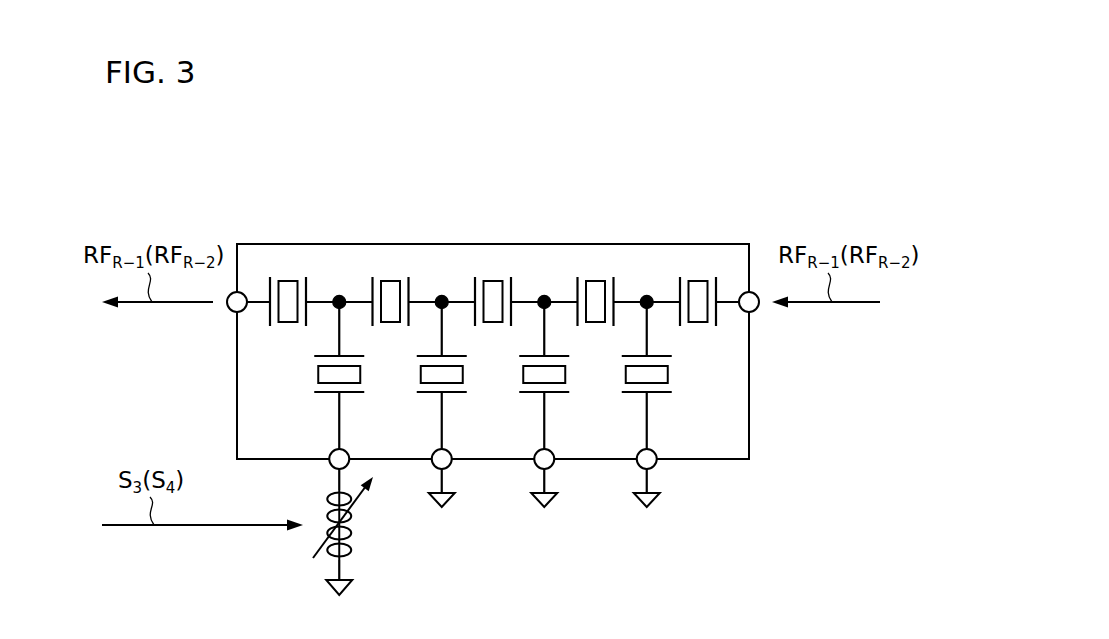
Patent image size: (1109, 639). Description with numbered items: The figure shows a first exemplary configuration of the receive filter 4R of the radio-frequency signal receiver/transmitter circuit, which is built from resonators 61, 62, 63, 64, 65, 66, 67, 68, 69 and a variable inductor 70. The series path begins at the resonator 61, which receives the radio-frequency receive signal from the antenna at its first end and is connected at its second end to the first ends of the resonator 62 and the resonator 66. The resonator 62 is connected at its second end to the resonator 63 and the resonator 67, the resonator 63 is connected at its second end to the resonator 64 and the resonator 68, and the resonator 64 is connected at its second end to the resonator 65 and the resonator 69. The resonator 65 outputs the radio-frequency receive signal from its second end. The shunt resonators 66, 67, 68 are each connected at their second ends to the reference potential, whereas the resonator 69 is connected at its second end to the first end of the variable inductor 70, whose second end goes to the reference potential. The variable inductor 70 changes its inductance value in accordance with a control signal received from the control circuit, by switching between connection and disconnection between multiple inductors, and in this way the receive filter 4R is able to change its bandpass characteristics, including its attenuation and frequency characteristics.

The receive filter 4R is at (771, 178).
The resonator 61 is at (700, 280).
The resonator 62 is at (598, 280).
The resonator 63 is at (495, 280).
The resonator 64 is at (392, 280).
The resonator 65 is at (290, 280).
The resonator 66 is at (668, 374).
The resonator 67 is at (565, 374).
The resonator 68 is at (463, 374).
The resonator 69 is at (318, 372).
The variable inductor 70 is at (350, 528).